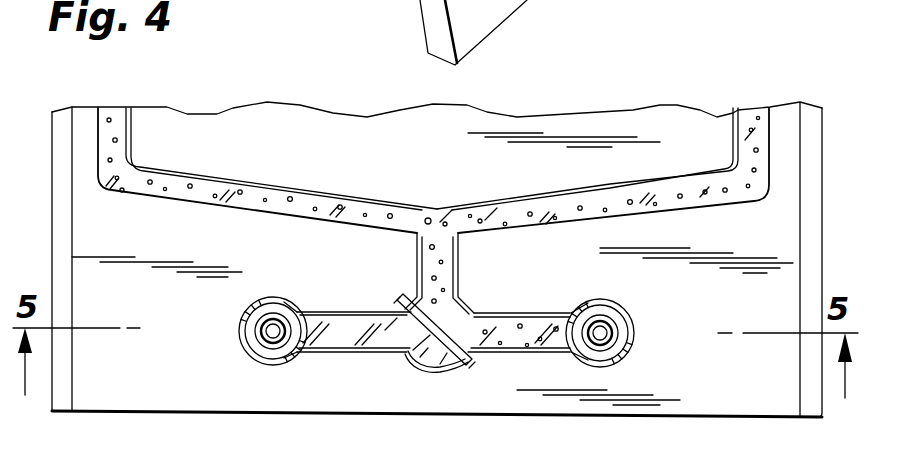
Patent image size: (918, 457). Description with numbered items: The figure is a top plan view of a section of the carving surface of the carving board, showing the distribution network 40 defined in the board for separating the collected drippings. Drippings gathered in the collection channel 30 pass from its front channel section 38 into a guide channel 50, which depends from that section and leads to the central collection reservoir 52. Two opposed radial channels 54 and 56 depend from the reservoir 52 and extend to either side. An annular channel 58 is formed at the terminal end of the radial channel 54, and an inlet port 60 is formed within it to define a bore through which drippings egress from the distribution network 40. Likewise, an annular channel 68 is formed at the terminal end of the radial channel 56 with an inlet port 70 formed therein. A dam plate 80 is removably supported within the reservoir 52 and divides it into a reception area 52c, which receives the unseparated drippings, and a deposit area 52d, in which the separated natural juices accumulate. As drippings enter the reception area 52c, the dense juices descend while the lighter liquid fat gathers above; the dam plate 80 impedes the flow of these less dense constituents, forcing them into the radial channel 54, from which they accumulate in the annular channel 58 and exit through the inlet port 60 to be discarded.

The collection channel 30 is at (130, 138).
The front channel section 38 is at (651, 193).
The distribution network 40 is at (316, 284).
The guide channel 50 is at (474, 216).
The central collection reservoir 52 is at (445, 366).
The reception area 52c is at (455, 310).
The deposit area 52d is at (433, 352).
The radial channel 54 is at (333, 335).
The radial channel 56 is at (523, 335).
The annular channel 58 is at (243, 348).
The inlet port 60 is at (274, 335).
The annular channel 68 is at (632, 324).
The inlet port 70 is at (600, 337).
The dam plate 80 is at (419, 300).